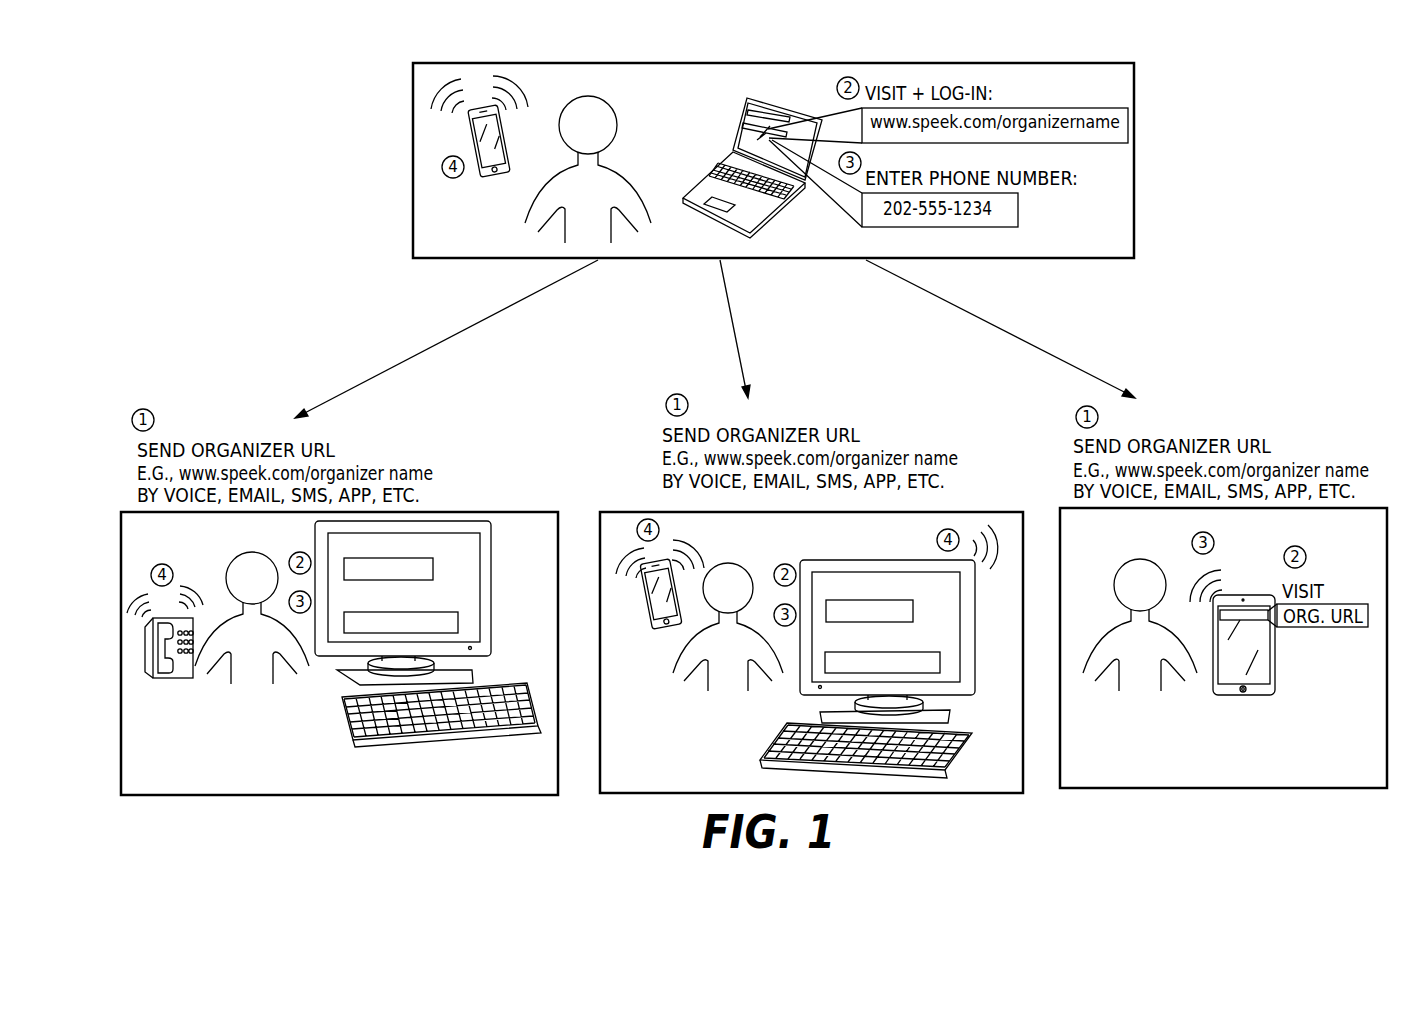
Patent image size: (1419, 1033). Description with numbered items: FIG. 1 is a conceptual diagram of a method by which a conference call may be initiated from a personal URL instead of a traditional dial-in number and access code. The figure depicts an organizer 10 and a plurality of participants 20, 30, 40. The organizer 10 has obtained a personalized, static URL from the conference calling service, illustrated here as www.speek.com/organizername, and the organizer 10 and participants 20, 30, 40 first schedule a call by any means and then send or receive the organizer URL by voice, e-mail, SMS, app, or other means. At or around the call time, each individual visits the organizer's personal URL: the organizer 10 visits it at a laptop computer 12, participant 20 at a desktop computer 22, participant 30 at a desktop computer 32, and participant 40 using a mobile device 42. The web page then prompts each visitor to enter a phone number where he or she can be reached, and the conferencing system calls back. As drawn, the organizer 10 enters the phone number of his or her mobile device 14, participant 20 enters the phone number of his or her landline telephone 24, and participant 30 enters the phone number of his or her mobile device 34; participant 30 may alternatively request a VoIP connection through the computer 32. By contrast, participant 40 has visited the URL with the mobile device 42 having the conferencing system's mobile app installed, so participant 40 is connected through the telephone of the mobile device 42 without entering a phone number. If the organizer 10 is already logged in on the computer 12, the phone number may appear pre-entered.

The organizer 10 is at (621, 98).
The laptop computer 12 is at (792, 110).
The mobile device 14 is at (496, 178).
The participant 20 is at (214, 559).
The desktop computer 22 is at (342, 678).
The landline telephone 24 is at (193, 675).
The participant 30 is at (757, 549).
The desktop computer 32 is at (885, 558).
The mobile device 34 is at (646, 610).
The participant 40 is at (1161, 551).
The mobile device 42 is at (1276, 659).